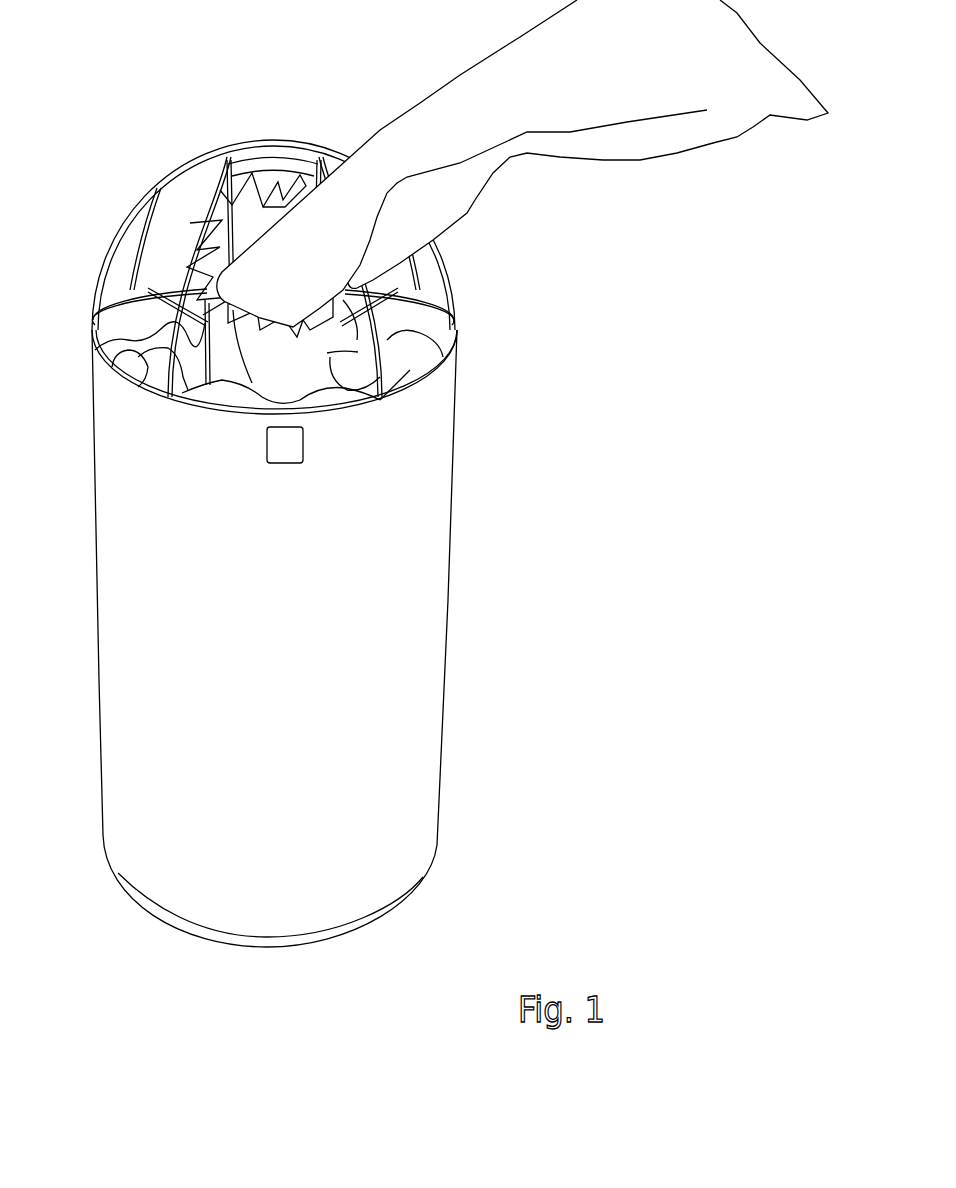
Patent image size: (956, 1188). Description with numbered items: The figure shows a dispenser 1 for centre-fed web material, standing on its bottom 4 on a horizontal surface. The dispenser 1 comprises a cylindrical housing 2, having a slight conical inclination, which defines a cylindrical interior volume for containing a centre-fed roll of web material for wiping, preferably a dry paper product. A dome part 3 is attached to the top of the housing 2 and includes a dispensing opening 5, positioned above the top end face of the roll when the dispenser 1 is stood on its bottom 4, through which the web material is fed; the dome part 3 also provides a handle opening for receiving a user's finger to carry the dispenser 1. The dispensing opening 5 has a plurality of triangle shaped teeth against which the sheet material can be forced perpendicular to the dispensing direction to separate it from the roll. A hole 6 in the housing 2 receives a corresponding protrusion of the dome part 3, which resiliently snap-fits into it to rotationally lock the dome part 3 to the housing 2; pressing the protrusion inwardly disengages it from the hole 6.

The dispenser 1 is at (517, 372).
The cylindrical housing 2 is at (407, 592).
The dome part 3 is at (93, 283).
The bottom 4 is at (373, 923).
The dispensing opening 5 is at (268, 200).
The hole 6 is at (290, 445).